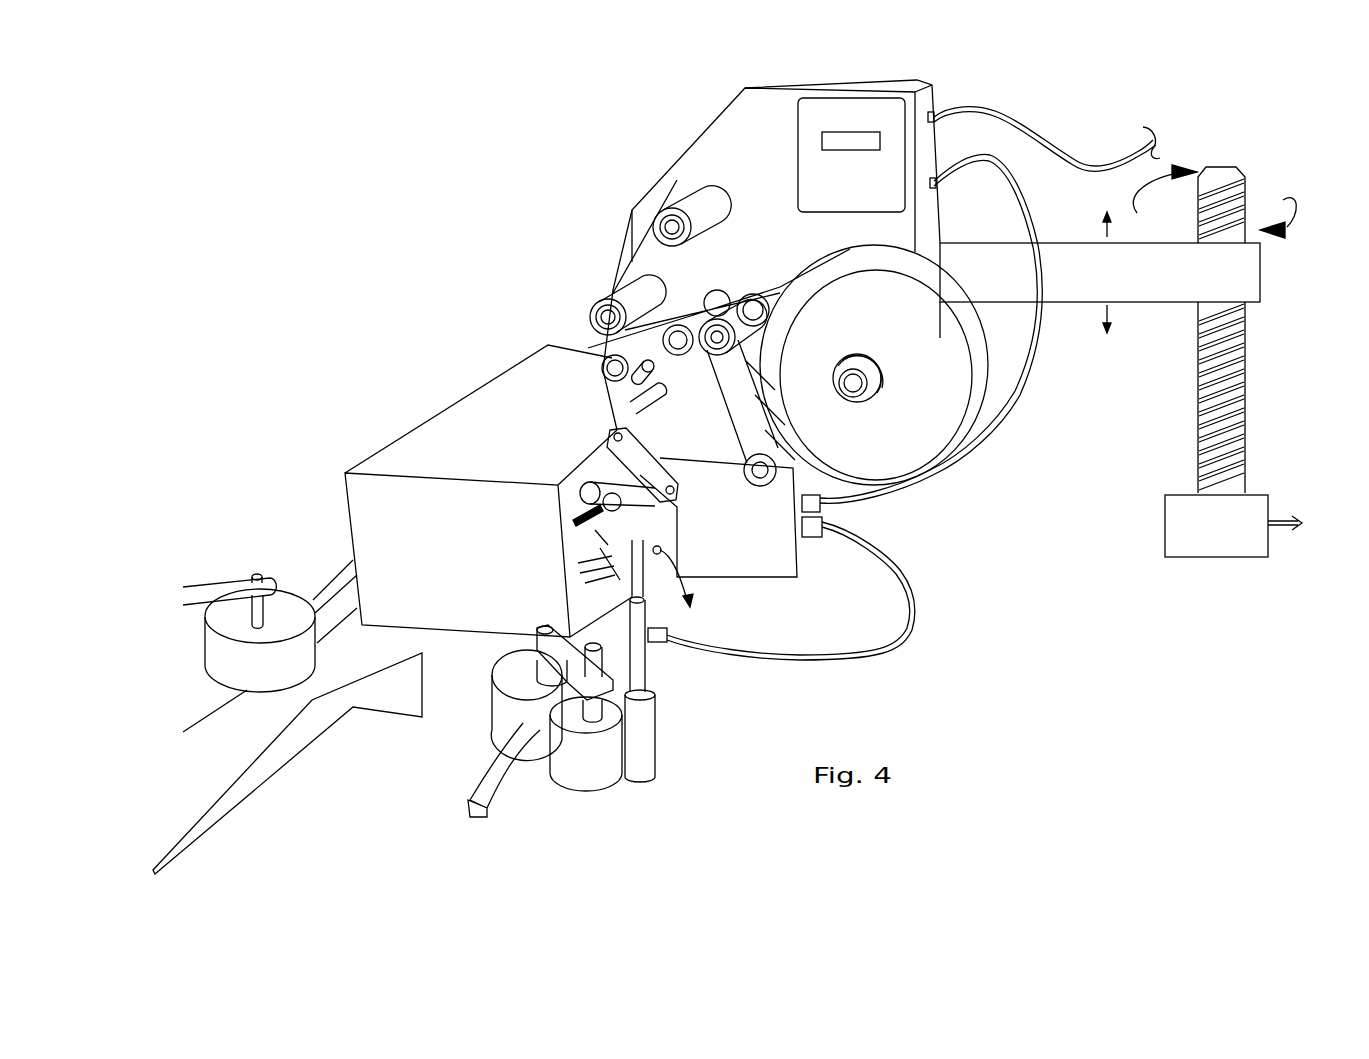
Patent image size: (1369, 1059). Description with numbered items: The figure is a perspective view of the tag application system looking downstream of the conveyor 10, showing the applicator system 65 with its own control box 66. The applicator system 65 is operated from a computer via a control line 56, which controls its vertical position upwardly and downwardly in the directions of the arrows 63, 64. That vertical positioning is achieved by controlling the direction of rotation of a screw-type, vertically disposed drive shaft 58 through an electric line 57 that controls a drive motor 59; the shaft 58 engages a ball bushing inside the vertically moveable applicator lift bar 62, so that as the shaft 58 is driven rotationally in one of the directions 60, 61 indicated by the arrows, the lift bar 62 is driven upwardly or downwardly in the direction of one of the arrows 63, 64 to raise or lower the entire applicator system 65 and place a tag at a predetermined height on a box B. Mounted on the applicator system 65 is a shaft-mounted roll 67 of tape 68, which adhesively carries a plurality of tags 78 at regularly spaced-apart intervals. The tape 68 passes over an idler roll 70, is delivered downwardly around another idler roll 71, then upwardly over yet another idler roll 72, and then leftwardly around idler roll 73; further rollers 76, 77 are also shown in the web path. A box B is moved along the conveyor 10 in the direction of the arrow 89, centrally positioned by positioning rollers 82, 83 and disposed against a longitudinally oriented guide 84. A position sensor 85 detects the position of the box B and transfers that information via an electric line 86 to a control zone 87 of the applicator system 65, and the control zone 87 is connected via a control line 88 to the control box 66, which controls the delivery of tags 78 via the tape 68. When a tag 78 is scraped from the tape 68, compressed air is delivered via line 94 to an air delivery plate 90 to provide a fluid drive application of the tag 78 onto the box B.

The conveyor 10 is at (392, 840).
The control line 56 is at (1087, 152).
The electric line 57 is at (1268, 533).
The drive shaft 58 is at (1212, 437).
The drive motor 59 is at (1252, 503).
The direction of rotation 60 is at (1283, 200).
The direction of rotation 61 is at (1197, 172).
The applicator lift bar 62 is at (1237, 277).
The upward direction arrow 63 is at (1100, 230).
The downward direction arrow 64 is at (1105, 322).
The applicator system 65 is at (776, 62).
The control box 66 is at (863, 86).
The roll 67 is at (823, 293).
The tape 68 is at (880, 258).
The idler roll 70 is at (757, 307).
The idler roll 71 is at (820, 505).
The idler roll 72 is at (670, 350).
The idler roll 73 is at (652, 352).
The guide roller 76 is at (600, 314).
The guide roller 77 is at (693, 200).
The tag 78 is at (750, 377).
The positioning roller 82 is at (223, 660).
The positioning roller 83 is at (515, 718).
The guide 84 is at (635, 657).
The position sensor 85 is at (657, 617).
The electric line 86 is at (913, 603).
The control zone 87 is at (773, 532).
The control line 88 is at (977, 457).
The direction arrow 89 is at (278, 770).
The air delivery plate 90 is at (667, 530).
The air line 94 is at (675, 568).
The box B is at (397, 470).